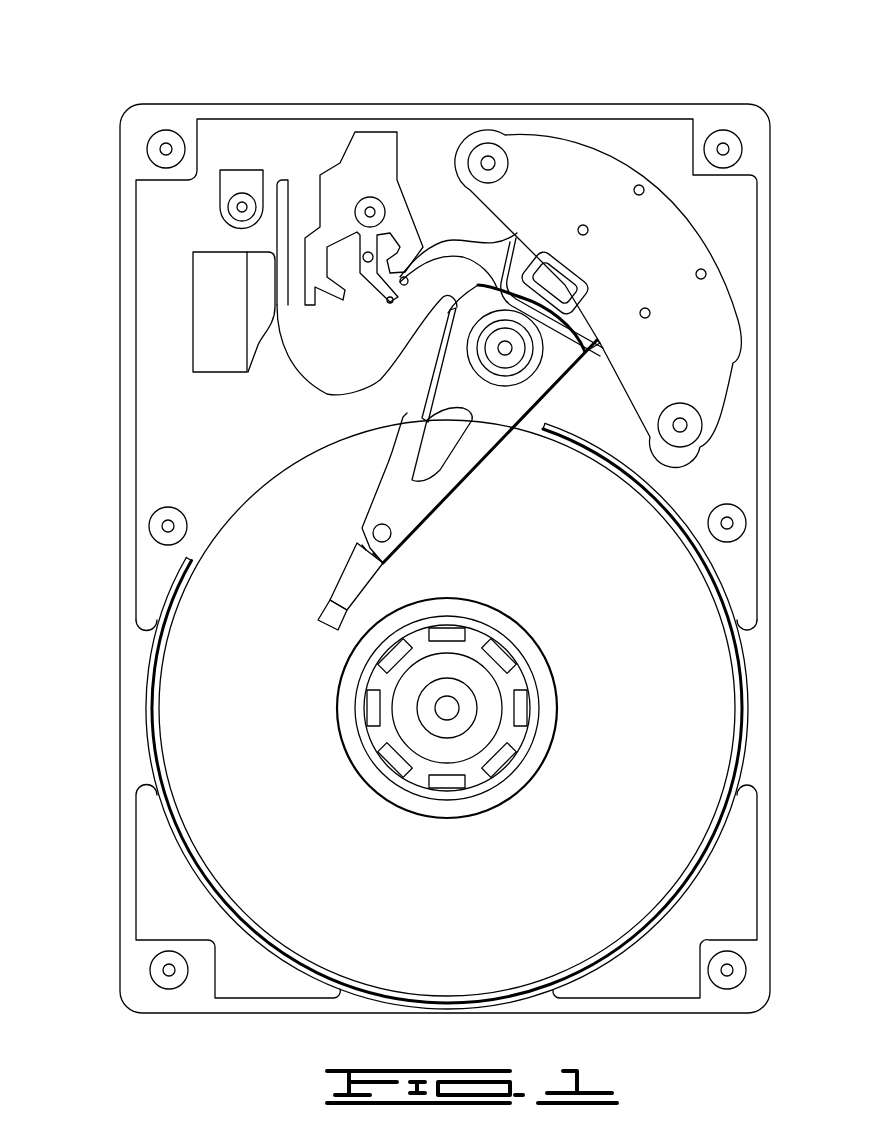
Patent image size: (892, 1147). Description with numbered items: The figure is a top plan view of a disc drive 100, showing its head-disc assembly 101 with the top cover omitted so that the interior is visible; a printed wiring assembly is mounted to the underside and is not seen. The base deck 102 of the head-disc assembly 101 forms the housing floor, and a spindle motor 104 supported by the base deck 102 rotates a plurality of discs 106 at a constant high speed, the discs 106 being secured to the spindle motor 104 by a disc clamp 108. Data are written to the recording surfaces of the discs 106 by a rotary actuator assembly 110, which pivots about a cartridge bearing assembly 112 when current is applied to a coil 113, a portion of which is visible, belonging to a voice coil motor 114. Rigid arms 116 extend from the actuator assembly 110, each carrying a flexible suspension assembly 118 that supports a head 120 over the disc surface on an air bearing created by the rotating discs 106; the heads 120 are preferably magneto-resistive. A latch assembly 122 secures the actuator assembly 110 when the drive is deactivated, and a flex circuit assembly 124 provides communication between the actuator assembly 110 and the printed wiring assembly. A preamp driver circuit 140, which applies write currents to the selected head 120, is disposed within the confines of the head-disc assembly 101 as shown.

The disc drive 100 is at (226, 88).
The head-disc assembly 101 is at (143, 162).
The base deck 102 is at (205, 432).
The spindle motor 104 is at (430, 733).
The discs 106 is at (670, 790).
The disc clamp 108 is at (353, 753).
The rotary actuator assembly 110 is at (408, 457).
The cartridge bearing assembly 112 is at (520, 363).
The coil 113 is at (597, 303).
The voice coil motor 114 is at (538, 197).
The rigid arms 116 is at (390, 512).
The flexible suspension assembly 118 is at (345, 587).
The heads 120 is at (318, 620).
The latch assembly 122 is at (370, 152).
The flex circuit assembly 124 is at (315, 403).
The preamp driver circuit 140 is at (427, 350).